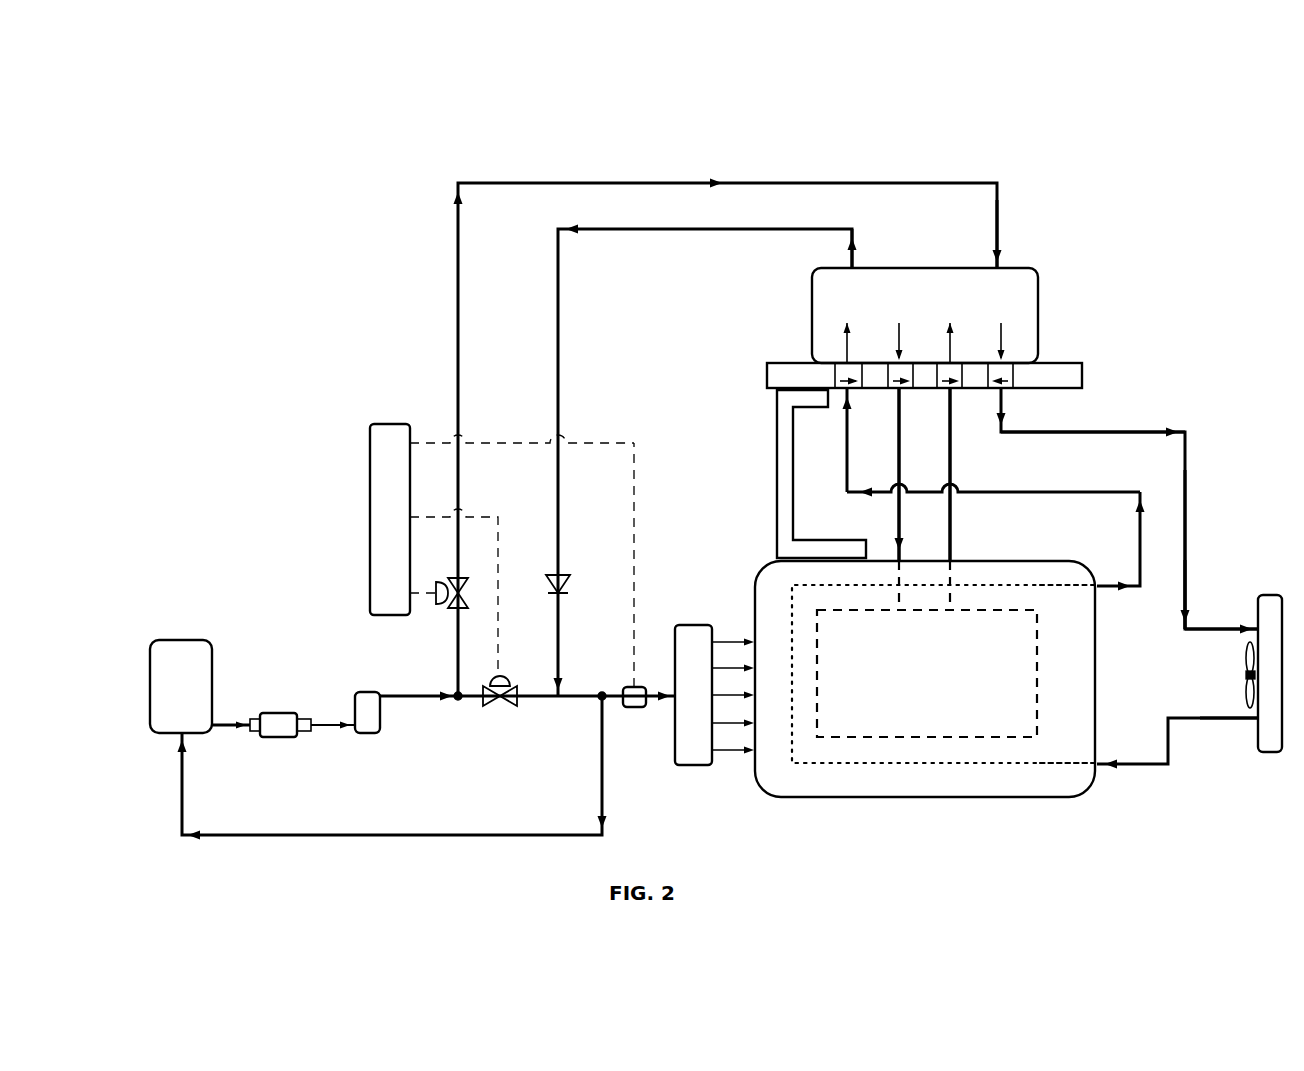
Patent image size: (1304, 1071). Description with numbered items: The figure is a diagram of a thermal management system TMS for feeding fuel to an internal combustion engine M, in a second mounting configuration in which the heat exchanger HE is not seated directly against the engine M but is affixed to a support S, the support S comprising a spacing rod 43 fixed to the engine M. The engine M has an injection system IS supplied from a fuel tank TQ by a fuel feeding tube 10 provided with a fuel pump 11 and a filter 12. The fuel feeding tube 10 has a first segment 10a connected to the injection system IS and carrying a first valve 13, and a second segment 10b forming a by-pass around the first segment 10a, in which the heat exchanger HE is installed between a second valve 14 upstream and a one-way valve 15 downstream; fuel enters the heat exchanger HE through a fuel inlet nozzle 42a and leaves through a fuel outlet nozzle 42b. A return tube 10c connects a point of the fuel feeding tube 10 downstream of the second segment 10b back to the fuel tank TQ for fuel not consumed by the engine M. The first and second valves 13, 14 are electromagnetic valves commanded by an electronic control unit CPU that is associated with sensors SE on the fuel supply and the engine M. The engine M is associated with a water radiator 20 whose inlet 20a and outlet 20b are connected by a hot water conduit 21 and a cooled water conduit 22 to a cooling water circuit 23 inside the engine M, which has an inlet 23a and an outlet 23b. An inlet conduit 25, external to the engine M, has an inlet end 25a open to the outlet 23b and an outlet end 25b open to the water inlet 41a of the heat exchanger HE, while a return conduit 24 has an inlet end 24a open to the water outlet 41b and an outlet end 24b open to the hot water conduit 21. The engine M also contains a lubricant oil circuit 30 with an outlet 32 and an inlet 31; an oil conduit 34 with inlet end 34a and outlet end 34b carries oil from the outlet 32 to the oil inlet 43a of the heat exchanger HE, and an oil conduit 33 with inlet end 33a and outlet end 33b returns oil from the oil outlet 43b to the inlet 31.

The fuel feeding tube 10 is at (418, 712).
The first segment 10a is at (543, 715).
The second segment 10b is at (618, 215).
The return tube 10c is at (332, 828).
The fuel pump 11 is at (281, 706).
The filter 12 is at (345, 695).
The first valve 13 is at (503, 716).
The second valve 14 is at (445, 615).
The one-way valve 15 is at (572, 585).
The water radiator 20 is at (1255, 590).
The inlet 20a is at (1188, 615).
The outlet 20b is at (1252, 720).
The hot water conduit 21 is at (1212, 636).
The cooled water conduit 22 is at (1200, 728).
The cooling water circuit 23 is at (930, 755).
The inlet of the cooling water circuit 23a is at (1103, 776).
The outlet of the cooling water circuit 23b is at (1090, 595).
The return conduit 24 is at (1125, 425).
The inlet end 24a is at (1008, 402).
The outlet end 24b is at (1177, 603).
The inlet conduit 25 is at (1062, 486).
The inlet end 25a is at (1107, 578).
The outlet end 25b is at (843, 398).
The lubricant oil circuit 30 is at (962, 740).
The inlet of the lubricant oil circuit 31 is at (884, 565).
The outlet of the lubricant oil circuit 32 is at (958, 568).
The oil conduit 33 is at (892, 519).
The inlet end 33a is at (894, 396).
The outlet end 33b is at (912, 552).
The oil conduit 34 is at (960, 442).
The inlet end 34a is at (957, 550).
The outlet end 34b is at (945, 397).
The water inlet 41a is at (846, 366).
The water outlet 41b is at (1010, 365).
The fuel inlet nozzle 42a is at (1004, 218).
The fuel outlet nozzle 42b is at (858, 256).
The spacing rod 43 is at (770, 432).
The oil inlet 43a is at (965, 380).
The oil outlet 43b is at (900, 381).
The fuel tank TQ is at (191, 633).
The electronic control unit CPU is at (365, 437).
The thermal management system TMS is at (435, 408).
The sensors SE is at (636, 712).
The injection system IS is at (695, 770).
The internal combustion engine M is at (806, 805).
The support S is at (760, 372).
The heat exchanger HE is at (1050, 262).